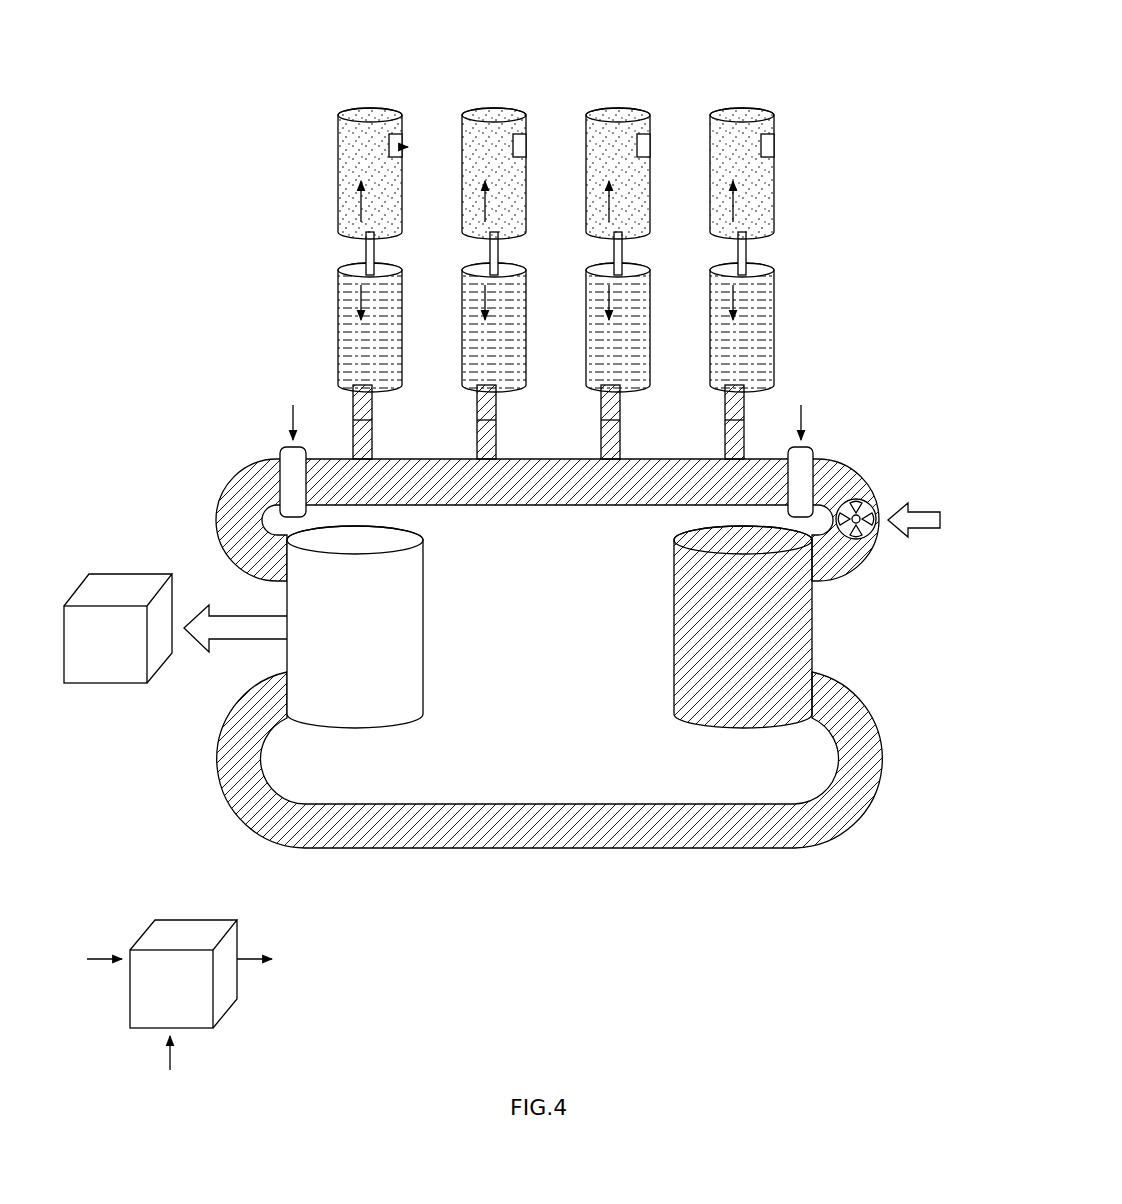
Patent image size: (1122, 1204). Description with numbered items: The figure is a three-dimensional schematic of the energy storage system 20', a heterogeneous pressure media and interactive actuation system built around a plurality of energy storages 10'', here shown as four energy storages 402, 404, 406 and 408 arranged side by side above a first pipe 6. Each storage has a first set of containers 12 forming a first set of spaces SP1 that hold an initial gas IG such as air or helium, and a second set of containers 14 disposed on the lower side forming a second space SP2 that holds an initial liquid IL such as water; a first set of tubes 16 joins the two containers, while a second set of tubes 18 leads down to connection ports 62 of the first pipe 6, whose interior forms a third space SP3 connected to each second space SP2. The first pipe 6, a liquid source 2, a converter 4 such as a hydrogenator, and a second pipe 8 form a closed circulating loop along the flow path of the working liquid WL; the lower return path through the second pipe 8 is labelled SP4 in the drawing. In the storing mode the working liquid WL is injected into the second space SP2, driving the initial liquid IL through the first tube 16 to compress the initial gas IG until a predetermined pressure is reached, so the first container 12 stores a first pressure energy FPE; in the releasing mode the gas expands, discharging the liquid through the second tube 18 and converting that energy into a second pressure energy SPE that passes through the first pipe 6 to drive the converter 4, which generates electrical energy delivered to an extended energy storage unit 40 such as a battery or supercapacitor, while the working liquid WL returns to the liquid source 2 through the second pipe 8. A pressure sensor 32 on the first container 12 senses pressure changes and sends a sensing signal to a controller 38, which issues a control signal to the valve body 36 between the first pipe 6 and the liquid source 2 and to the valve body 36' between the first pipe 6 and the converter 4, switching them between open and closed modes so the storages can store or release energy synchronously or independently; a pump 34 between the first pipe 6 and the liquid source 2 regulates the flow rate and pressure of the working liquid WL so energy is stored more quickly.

The energy storage system 20' is at (498, 557).
The energy storage 10'' is at (544, 253).
The energy storage 402 is at (333, 108).
The energy storage 404 is at (457, 108).
The energy storage 406 is at (581, 108).
The energy storage 408 is at (705, 108).
The first set of containers 12 is at (774, 207).
The second set of containers 14 is at (776, 363).
The first set of tubes 16 is at (746, 247).
The second set of tubes 18 is at (621, 407).
The connection ports 62 is at (621, 440).
The pressure sensor 32 is at (767, 148).
The pump 34 is at (863, 500).
The valve body 36 is at (829, 470).
The valve body 36' is at (261, 470).
The liquid source 2 is at (813, 610).
The converter 4 is at (430, 613).
The first pipe 6 is at (575, 505).
The second pipe 8 is at (575, 800).
The controller 38 is at (188, 925).
The extended energy storage unit 40 is at (125, 580).
The first set of spaces SP1 is at (774, 121).
The second space SP2 is at (776, 283).
The third space SP3 is at (542, 486).
The fourth space SP4 is at (488, 834).
The initial gas IG is at (765, 178).
The initial liquid IL is at (776, 333).
The working liquid WL is at (802, 650).
The first pressure energy FPE is at (357, 196).
The second pressure energy SPE is at (357, 296).